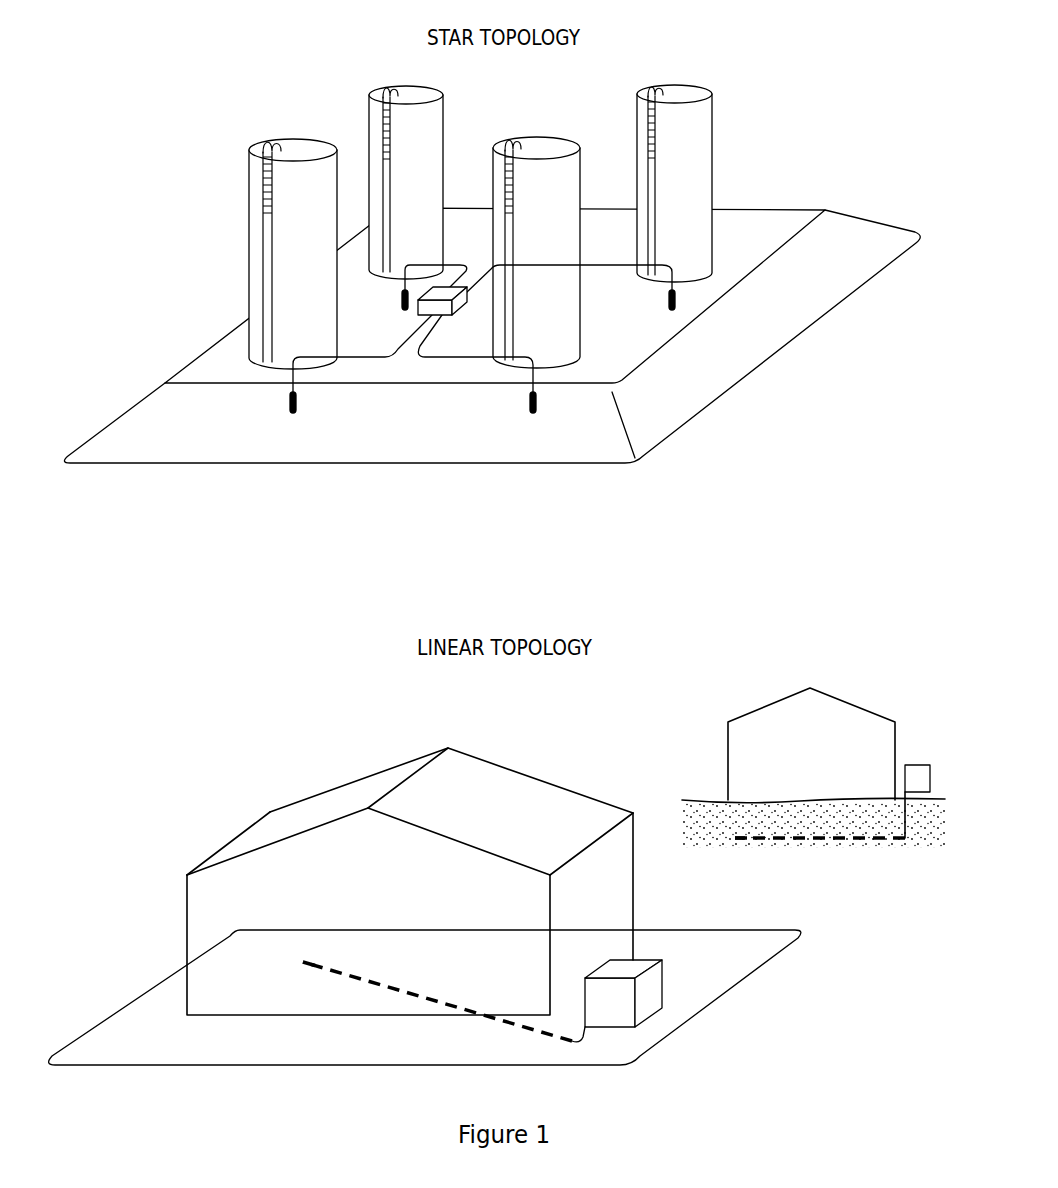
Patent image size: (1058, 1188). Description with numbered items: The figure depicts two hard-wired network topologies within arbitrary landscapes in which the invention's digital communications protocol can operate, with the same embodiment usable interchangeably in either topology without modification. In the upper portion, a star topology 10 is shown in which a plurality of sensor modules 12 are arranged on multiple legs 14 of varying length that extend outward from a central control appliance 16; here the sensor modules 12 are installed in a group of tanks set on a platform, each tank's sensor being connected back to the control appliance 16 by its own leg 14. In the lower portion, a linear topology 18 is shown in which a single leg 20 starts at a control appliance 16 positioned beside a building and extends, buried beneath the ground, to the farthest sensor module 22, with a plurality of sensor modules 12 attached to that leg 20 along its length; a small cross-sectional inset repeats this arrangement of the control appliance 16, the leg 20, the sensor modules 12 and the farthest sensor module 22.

The star topology 10 is at (829, 375).
The sensor module 12 is at (584, 564).
The leg 14 is at (482, 328).
The control appliance 16 is at (674, 657).
The linear topology 18 is at (751, 1020).
The single leg 20 is at (744, 926).
The farthest sensor module 22 is at (519, 911).